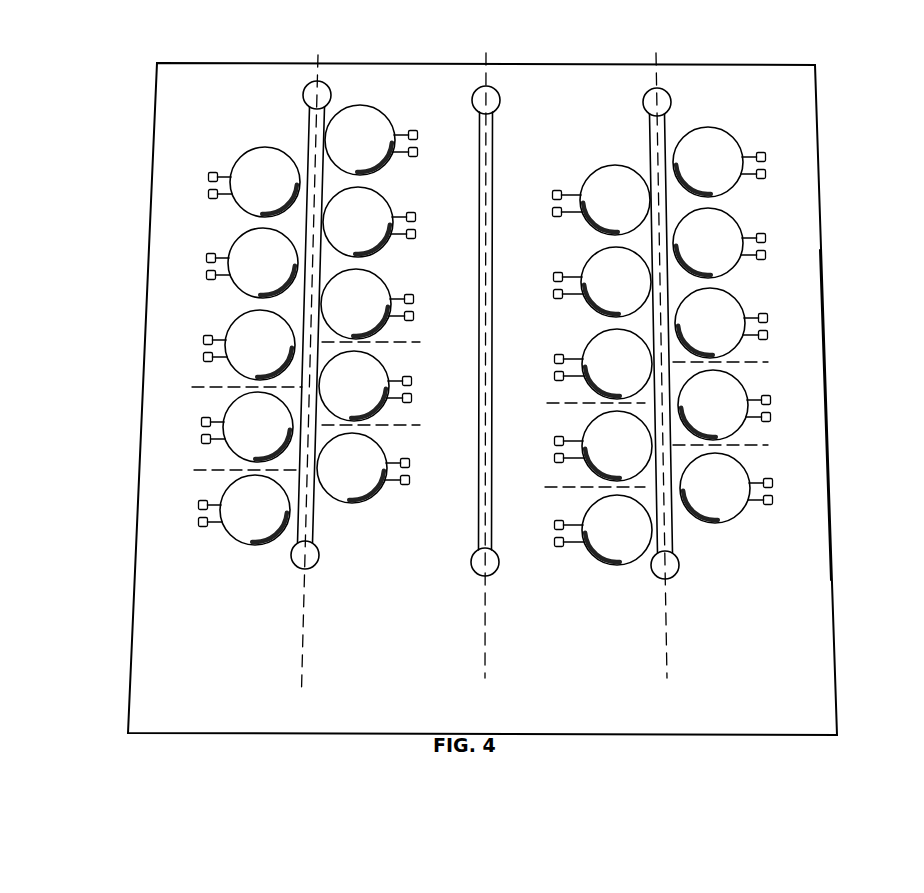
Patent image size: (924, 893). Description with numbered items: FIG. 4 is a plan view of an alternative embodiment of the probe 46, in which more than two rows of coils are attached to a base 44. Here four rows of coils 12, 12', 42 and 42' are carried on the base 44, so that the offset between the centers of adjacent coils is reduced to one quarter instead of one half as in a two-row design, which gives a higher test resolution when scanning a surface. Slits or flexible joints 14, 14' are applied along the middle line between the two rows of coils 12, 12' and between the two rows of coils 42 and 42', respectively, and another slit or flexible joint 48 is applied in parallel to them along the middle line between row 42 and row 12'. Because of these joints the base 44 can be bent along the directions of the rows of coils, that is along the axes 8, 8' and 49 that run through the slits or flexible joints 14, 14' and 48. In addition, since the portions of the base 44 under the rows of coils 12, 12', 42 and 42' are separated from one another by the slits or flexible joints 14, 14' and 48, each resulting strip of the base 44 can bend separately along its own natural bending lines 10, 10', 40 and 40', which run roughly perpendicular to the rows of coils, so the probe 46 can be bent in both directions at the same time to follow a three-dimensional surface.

The axis 8 is at (646, 370).
The axis 8' is at (286, 373).
The natural bending line 10 is at (737, 424).
The natural bending line 10' is at (577, 463).
The row of coils 12 is at (726, 504).
The row of coils 12' is at (604, 547).
The slit or flexible joint 14 is at (630, 99).
The slit or flexible joint 14' is at (288, 91).
The natural bending line 40 is at (387, 398).
The natural bending line 40' is at (225, 450).
The row of coils 42 is at (363, 486).
The row of coils 42' is at (245, 529).
The base 44 is at (818, 628).
The probe 46 is at (842, 500).
The slit or flexible joint 48 is at (481, 122).
The axis 49 is at (486, 630).